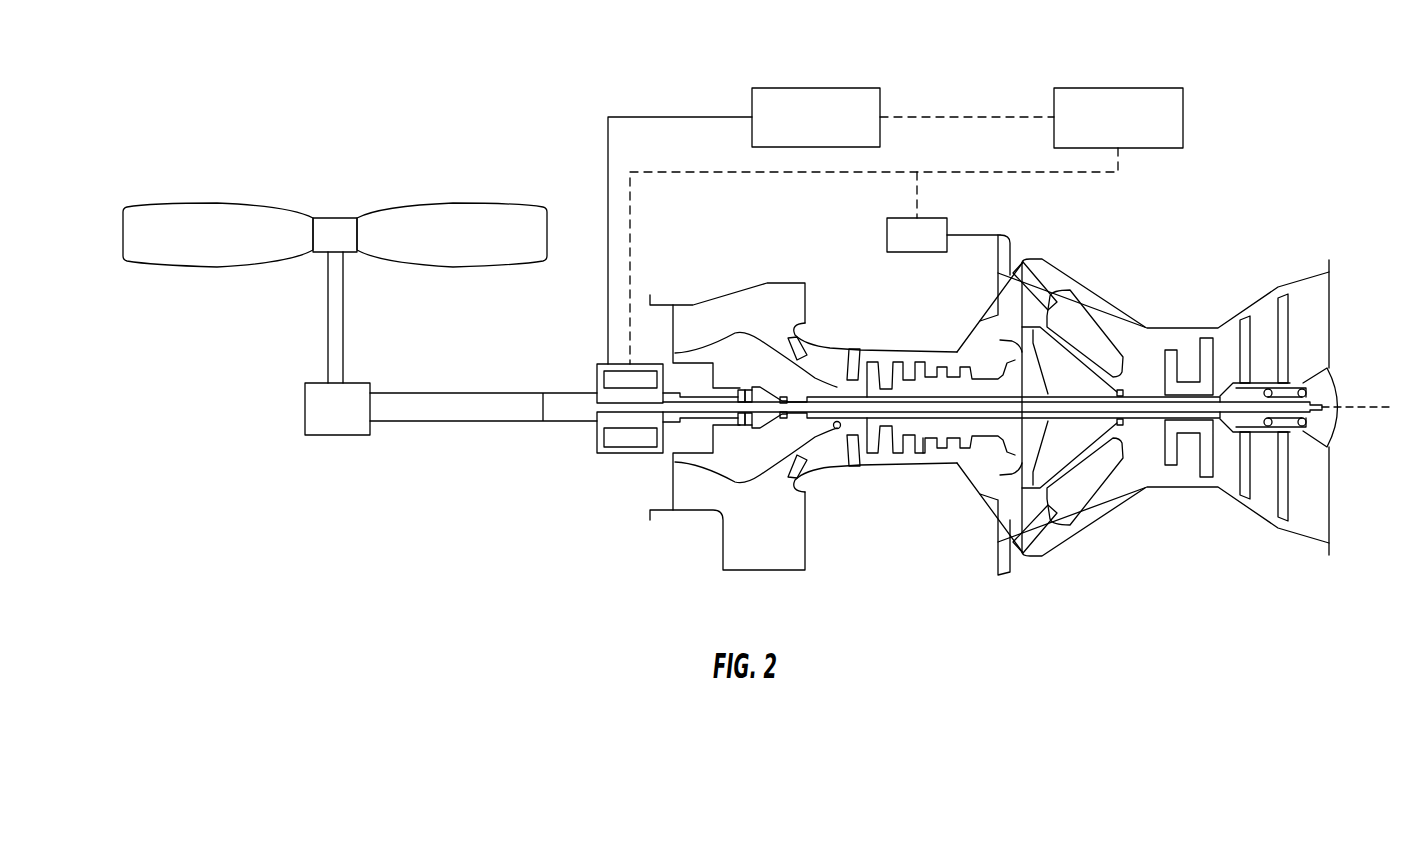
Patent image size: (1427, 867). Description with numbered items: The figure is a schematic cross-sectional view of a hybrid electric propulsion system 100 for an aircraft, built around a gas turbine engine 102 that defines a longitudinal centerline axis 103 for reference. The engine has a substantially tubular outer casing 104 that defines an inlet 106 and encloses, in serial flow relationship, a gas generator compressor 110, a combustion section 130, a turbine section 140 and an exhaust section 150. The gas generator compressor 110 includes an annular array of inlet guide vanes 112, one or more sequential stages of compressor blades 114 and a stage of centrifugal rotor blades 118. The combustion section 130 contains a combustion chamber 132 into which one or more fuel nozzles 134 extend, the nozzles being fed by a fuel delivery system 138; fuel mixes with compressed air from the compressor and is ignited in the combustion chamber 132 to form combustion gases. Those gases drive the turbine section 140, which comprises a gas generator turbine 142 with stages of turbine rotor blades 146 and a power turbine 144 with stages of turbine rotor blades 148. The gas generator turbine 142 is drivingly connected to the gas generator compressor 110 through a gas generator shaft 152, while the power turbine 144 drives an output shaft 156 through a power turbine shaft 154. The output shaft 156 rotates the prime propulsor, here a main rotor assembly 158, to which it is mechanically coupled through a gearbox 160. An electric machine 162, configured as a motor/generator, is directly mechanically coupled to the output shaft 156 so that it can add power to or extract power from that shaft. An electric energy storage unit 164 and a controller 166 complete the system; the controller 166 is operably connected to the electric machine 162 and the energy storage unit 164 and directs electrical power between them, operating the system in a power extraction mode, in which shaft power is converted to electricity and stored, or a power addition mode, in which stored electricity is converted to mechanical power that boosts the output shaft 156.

The hybrid electric propulsion system 100 is at (641, 48).
The gas turbine engine 102 is at (1145, 245).
The centerline axis 103 is at (1357, 400).
The outer casing 104 is at (883, 463).
The inlet 106 is at (733, 295).
The gas generator compressor 110 is at (918, 335).
The inlet guide vanes 112 is at (840, 453).
The compressor blades 114 is at (923, 455).
The centrifugal rotor blades 118 is at (1000, 340).
The combustion section 130 is at (1091, 563).
The combustion chamber 132 is at (1104, 493).
The fuel nozzles 134 is at (1032, 277).
The fuel delivery system 138 is at (963, 214).
The turbine section 140 is at (1238, 245).
The gas generator turbine 142 is at (1183, 322).
The power turbine 144 is at (1263, 531).
The turbine rotor blades 146 is at (1205, 480).
The turbine rotor blades 148 is at (1293, 297).
The exhaust section 150 is at (1345, 323).
The gas generator shaft 152 is at (1133, 380).
The power turbine shaft 154 is at (1160, 418).
The output shaft 156 is at (440, 393).
The main rotor assembly 158 is at (245, 348).
The gearbox 160 is at (353, 423).
The electric machine 162 is at (600, 455).
The electric energy storage unit 164 is at (832, 130).
The controller 166 is at (1134, 130).